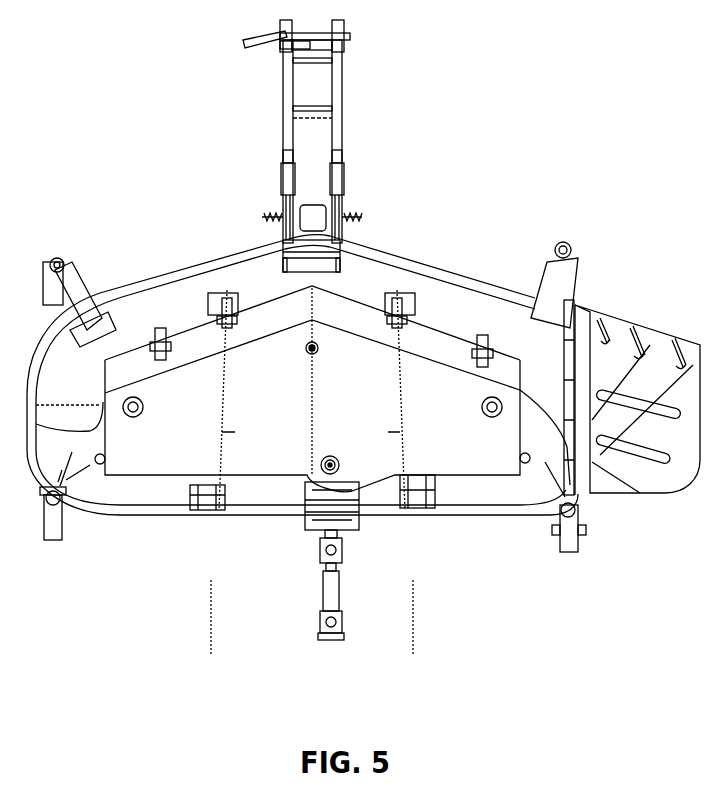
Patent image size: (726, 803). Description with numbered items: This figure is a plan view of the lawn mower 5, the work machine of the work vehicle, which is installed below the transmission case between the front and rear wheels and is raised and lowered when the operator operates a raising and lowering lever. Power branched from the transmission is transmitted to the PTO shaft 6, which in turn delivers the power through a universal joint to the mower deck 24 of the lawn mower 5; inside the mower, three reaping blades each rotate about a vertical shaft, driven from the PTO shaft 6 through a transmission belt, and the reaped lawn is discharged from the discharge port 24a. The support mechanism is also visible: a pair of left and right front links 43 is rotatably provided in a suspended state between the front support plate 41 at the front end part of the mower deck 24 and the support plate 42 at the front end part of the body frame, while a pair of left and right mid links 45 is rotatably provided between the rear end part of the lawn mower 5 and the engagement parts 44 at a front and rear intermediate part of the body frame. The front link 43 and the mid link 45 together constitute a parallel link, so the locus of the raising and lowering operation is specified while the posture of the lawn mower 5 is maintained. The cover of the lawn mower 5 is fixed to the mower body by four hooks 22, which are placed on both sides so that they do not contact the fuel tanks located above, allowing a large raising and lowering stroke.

The lawn mower 5 is at (503, 233).
The PTO shaft 6 is at (320, 583).
The hook 22 is at (157, 328).
The mower deck 24 is at (441, 292).
The discharge port 24a is at (622, 325).
The front support plate 41 is at (283, 240).
The support plate 42 is at (350, 30).
The front link 43 is at (283, 90).
The engagement part 44 is at (232, 293).
The mid link 45 is at (222, 432).